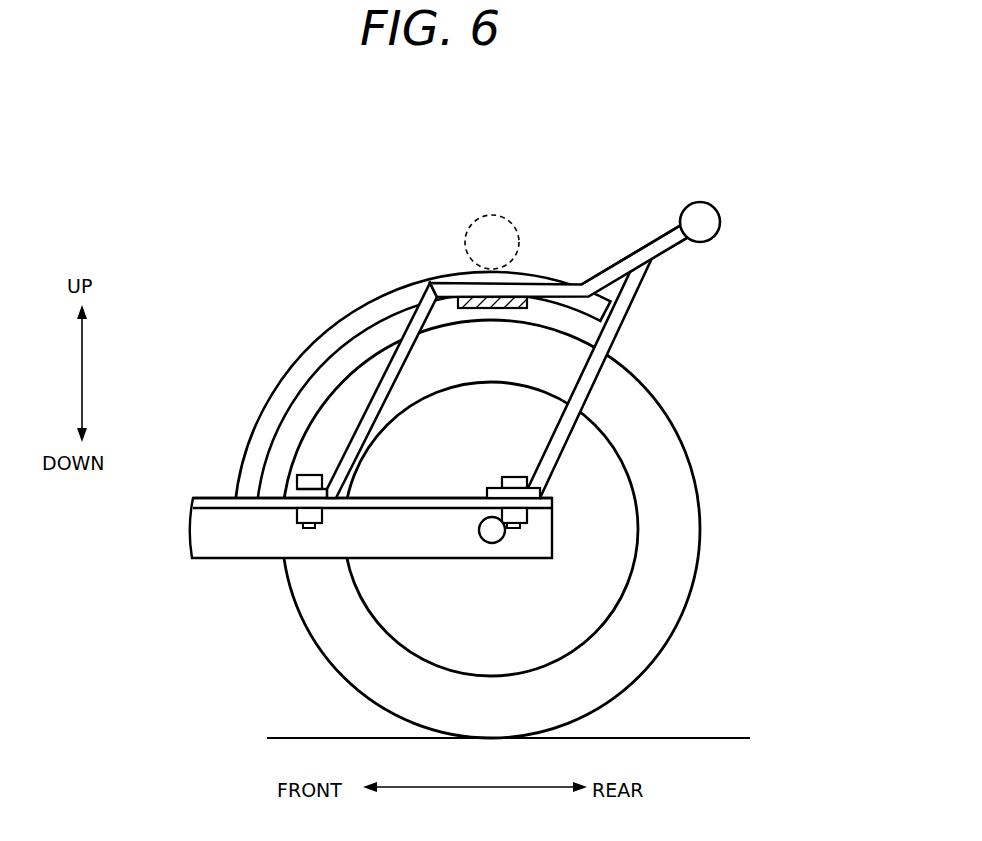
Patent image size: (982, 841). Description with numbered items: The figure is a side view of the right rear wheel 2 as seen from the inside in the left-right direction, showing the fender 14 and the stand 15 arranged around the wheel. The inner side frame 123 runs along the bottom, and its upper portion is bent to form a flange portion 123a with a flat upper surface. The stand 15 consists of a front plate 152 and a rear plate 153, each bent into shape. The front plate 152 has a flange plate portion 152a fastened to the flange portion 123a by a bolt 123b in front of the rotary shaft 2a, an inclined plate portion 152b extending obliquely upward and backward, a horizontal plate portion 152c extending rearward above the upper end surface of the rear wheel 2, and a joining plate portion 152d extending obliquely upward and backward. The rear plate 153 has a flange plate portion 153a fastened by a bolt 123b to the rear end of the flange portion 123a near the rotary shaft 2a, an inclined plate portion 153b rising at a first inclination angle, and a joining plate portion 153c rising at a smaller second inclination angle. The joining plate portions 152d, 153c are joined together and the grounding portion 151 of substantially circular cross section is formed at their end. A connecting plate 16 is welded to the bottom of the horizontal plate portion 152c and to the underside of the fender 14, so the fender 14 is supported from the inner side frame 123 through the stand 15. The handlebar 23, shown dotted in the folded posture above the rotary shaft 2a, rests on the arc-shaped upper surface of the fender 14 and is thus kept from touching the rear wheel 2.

The rear wheel 2 is at (678, 626).
The rotary shaft 2a is at (498, 545).
The fender 14 is at (236, 482).
The stand 15 is at (455, 366).
The connecting plate 16 is at (430, 283).
The handlebar 23 is at (481, 214).
The inner side frame 123 is at (371, 527).
The flange portion 123a is at (419, 497).
The bolt 123b is at (309, 475).
The grounding portion 151 is at (691, 204).
The front plate 152 is at (297, 388).
The flange plate portion 152a is at (294, 496).
The inclined plate portion 152b is at (407, 332).
The horizontal plate portion 152c is at (543, 283).
The joining plate portion 152d is at (636, 250).
The rear plate 153 is at (620, 409).
The flange plate portion 153a is at (527, 500).
The inclined plate portion 153b is at (593, 388).
The joining plate portion 153c is at (676, 246).